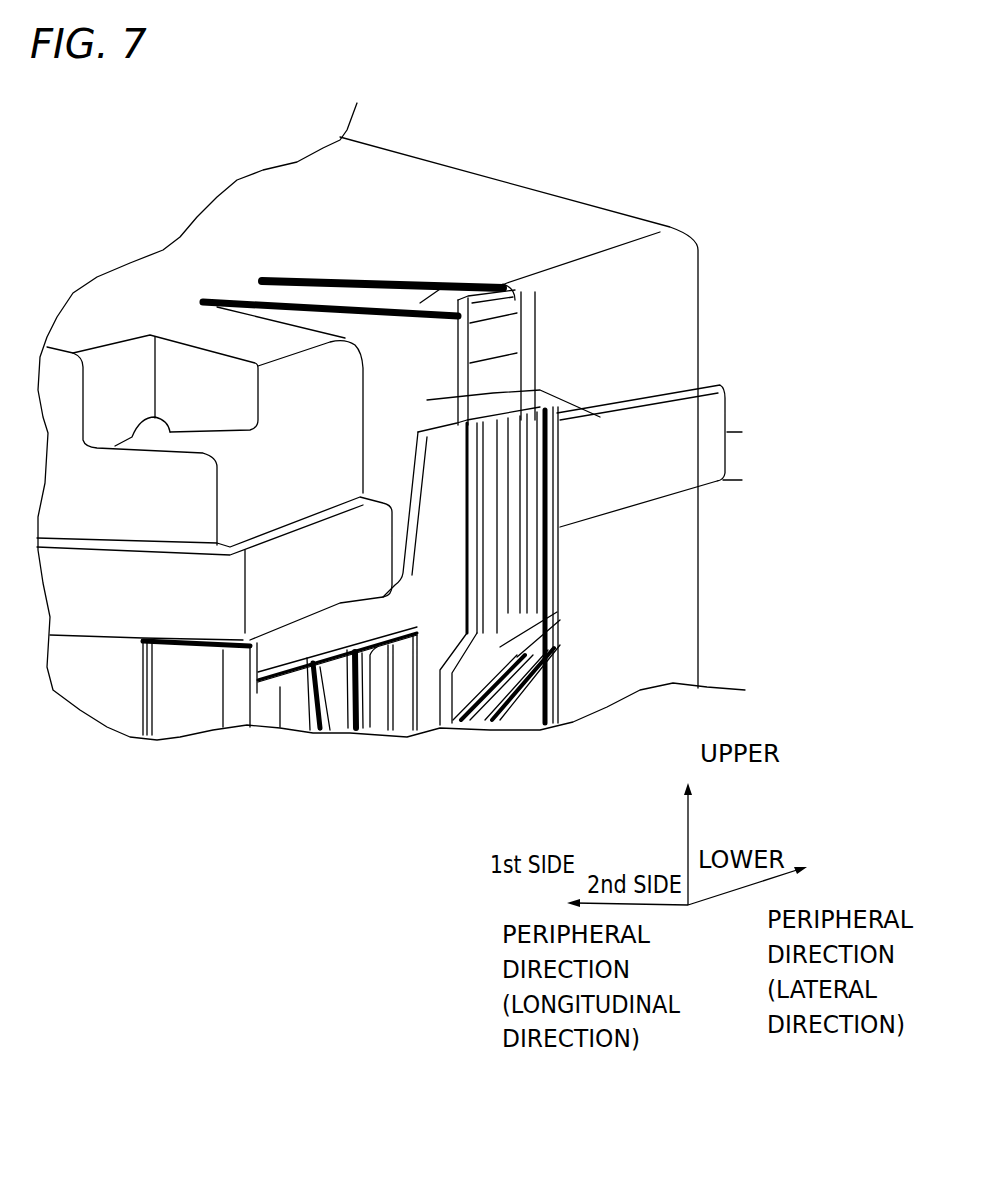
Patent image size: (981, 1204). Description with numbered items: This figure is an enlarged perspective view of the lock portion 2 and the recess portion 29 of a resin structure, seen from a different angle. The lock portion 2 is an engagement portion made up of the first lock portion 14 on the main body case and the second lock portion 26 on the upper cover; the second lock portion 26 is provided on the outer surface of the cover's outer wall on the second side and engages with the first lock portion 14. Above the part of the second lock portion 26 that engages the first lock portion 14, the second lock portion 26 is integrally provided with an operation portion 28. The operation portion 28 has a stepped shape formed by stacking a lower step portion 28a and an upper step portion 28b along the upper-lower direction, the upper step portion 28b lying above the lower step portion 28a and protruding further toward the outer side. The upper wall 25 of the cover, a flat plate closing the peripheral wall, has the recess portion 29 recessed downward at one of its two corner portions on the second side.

The lock portion 2 is at (815, 443).
The first lock portion 14 is at (513, 550).
The upper wall 25 is at (413, 213).
The second lock portion 26 is at (600, 443).
The operation portion 28 is at (662, 357).
The lower step portion 28a is at (502, 375).
The upper step portion 28b is at (502, 330).
The recess portion 29 is at (143, 420).